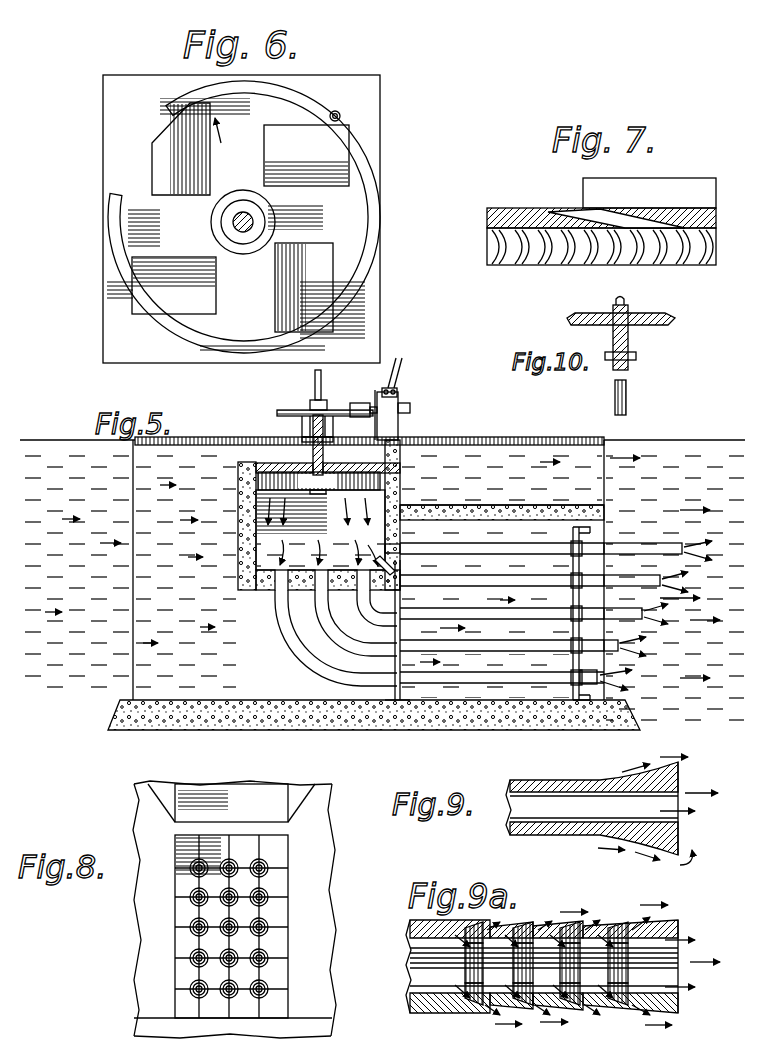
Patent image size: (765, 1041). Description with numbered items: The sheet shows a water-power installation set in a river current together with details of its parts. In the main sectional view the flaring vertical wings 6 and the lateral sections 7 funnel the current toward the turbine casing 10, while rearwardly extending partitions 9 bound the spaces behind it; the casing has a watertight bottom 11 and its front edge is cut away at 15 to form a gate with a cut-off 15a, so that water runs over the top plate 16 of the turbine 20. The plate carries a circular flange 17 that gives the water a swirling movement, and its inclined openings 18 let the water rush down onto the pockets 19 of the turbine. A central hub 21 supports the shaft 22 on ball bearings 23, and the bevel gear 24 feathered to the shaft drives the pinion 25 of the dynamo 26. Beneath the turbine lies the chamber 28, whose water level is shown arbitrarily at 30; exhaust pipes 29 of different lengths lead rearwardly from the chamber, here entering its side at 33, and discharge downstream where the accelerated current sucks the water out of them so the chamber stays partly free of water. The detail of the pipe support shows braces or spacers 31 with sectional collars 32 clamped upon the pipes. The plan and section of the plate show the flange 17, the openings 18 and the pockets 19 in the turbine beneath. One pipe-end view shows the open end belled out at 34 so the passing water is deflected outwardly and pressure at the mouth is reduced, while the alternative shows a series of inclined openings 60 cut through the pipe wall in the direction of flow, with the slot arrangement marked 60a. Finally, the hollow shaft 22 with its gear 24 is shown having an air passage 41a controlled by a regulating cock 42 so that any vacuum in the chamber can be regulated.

In FIG. 5, the vertical wings 6 is at (176, 580).
In FIG. 6, the lateral sections 7 is at (176, 153).
In FIG. 5, the partitions 9 is at (502, 498).
In FIG. 5, the turbine casing 10 is at (244, 545).
In FIG. 5, the watertight bottom 11 is at (330, 590).
In FIG. 6, the cut-away gate 15 is at (166, 108).
In FIG. 5, the cut-off 15a is at (238, 489).
In FIG. 6, the top plate 16 is at (236, 225).
In FIG. 7, the top plate 16 is at (500, 218).
In FIG. 5, the top plate 16 is at (352, 468).
In FIG. 6, the circular flange 17 is at (334, 131).
In FIG. 7, the circular flange 17 is at (685, 190).
In FIG. 5, the circular flange 17 is at (402, 441).
In FIG. 6, the inclined openings 18 is at (240, 217).
In FIG. 7, the inclined openings 18 is at (590, 216).
In FIG. 5, the inclined openings 18 is at (276, 460).
In FIG. 7, the pockets 19 is at (660, 258).
In FIG. 7, the turbine 20 is at (532, 262).
In FIG. 5, the turbine 20 is at (319, 483).
In FIG. 5, the hub 21 is at (302, 420).
In FIG. 6, the shaft 22 is at (247, 222).
In FIG. 10, the shaft 22 is at (630, 343).
In FIG. 5, the shaft 22 is at (318, 455).
In FIG. 5, the ball bearings 23 is at (329, 429).
In FIG. 10, the bevel gear 24 is at (675, 316).
In FIG. 5, the bevel gear 24 is at (303, 410).
In FIG. 5, the pinion 25 is at (358, 403).
In FIG. 5, the dynamo 26 is at (395, 403).
In FIG. 5, the chamber 28 is at (320, 530).
In FIG. 5, the exhaust pipes 29 is at (450, 612).
In FIG. 8, the exhaust pipes 29 is at (231, 926).
In FIG. 9, the exhaust pipes 29 is at (565, 835).
In FIG. 9A, the exhaust pipes 29 is at (542, 966).
In FIG. 5, the water level 30 is at (296, 447).
In FIG. 5, the braces or spacers 31 is at (576, 566).
In FIG. 8, the braces or spacers 31 is at (262, 858).
In FIG. 5, the sectional collars 32 is at (575, 583).
In FIG. 8, the sectional collars 32 is at (262, 892).
In FIG. 5, the side entries 33 is at (531, 572).
In FIG. 8, the side entries 33 is at (265, 928).
In FIG. 9, the belled open end 34 is at (680, 770).
In FIG. 10, the air passage 41a is at (628, 392).
In FIG. 10, the regulating cock 42 is at (612, 300).
In FIG. 9A, the inclined openings 60 is at (617, 943).
In FIG. 9A, the collar vane 60a is at (630, 1010).